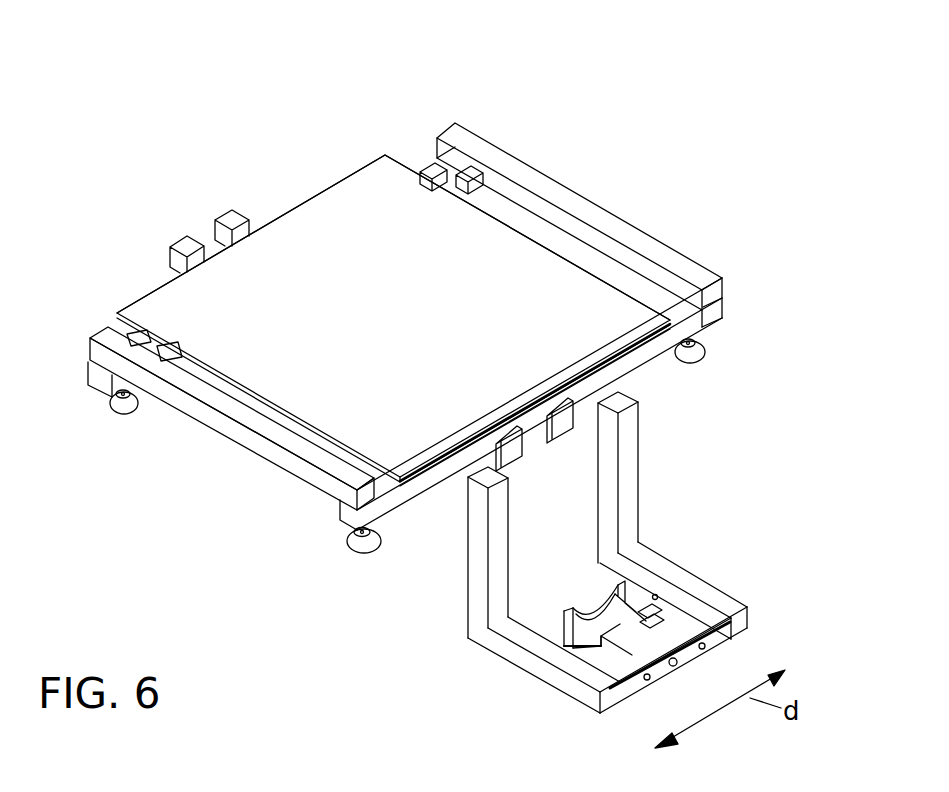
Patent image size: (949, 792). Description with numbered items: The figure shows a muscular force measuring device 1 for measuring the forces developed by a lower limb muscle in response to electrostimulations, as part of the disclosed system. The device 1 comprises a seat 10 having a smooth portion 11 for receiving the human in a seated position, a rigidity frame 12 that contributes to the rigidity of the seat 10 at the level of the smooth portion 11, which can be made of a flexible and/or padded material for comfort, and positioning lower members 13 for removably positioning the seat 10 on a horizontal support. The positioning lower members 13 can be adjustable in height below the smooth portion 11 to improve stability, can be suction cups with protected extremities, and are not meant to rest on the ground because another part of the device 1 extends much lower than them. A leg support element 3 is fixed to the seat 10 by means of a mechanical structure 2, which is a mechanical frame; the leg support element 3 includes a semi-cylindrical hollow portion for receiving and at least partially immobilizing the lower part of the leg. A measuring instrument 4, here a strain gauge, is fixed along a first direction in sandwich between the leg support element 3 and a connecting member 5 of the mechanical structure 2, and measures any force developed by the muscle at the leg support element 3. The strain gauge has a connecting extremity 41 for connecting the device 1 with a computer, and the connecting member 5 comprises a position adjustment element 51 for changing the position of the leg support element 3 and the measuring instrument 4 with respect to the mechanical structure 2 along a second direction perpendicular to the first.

The muscular force measuring device 1 is at (150, 129).
The seat 10 is at (335, 246).
The smooth portion 11 is at (371, 186).
The rigidity frame 12 is at (188, 234).
The positioning lower members 13 is at (712, 352).
The mechanical structure 2 is at (622, 406).
The leg support element 3 is at (603, 606).
The measuring instrument 4 is at (612, 639).
The connecting extremity 41 is at (660, 617).
The connecting member 5 is at (638, 683).
The position adjustment element 51 is at (706, 647).